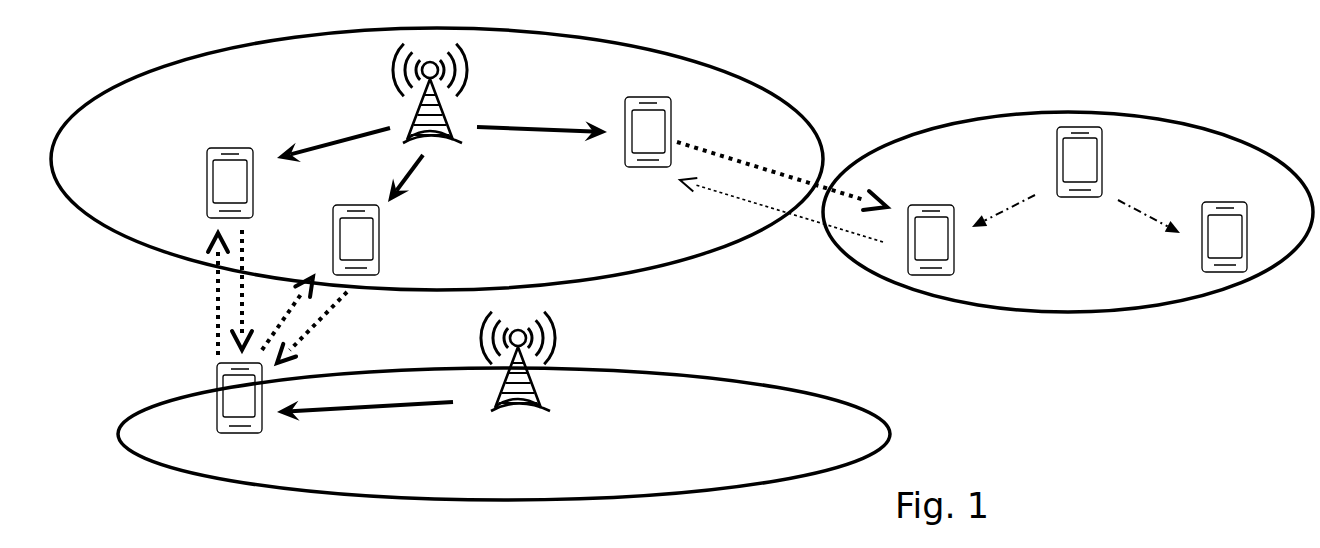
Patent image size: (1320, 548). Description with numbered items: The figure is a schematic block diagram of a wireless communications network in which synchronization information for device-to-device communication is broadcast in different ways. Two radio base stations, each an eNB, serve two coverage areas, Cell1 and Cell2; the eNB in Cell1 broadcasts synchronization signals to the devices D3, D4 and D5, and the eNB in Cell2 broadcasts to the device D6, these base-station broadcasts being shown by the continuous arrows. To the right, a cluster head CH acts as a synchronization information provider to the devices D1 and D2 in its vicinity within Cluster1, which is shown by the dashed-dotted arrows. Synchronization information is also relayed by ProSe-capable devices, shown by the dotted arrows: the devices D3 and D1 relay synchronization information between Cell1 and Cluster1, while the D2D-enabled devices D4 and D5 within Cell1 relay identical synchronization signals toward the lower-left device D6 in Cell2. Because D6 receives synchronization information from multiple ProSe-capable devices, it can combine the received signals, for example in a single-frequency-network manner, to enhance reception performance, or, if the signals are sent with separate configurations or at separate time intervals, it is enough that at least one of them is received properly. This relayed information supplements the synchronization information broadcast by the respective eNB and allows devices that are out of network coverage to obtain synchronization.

The device D1 is at (943, 247).
The device D2 is at (1240, 258).
The device D3 is at (626, 103).
The device D4 is at (208, 153).
The device D5 is at (379, 242).
The device D6 is at (260, 420).
The cluster head CH is at (1079, 177).
The eNodeB radio base station eNB is at (462, 143).
The cell 1 Cell1 is at (437, 171).
The cell 2 Cell2 is at (504, 454).
The cluster 1 Cluster1 is at (1068, 235).